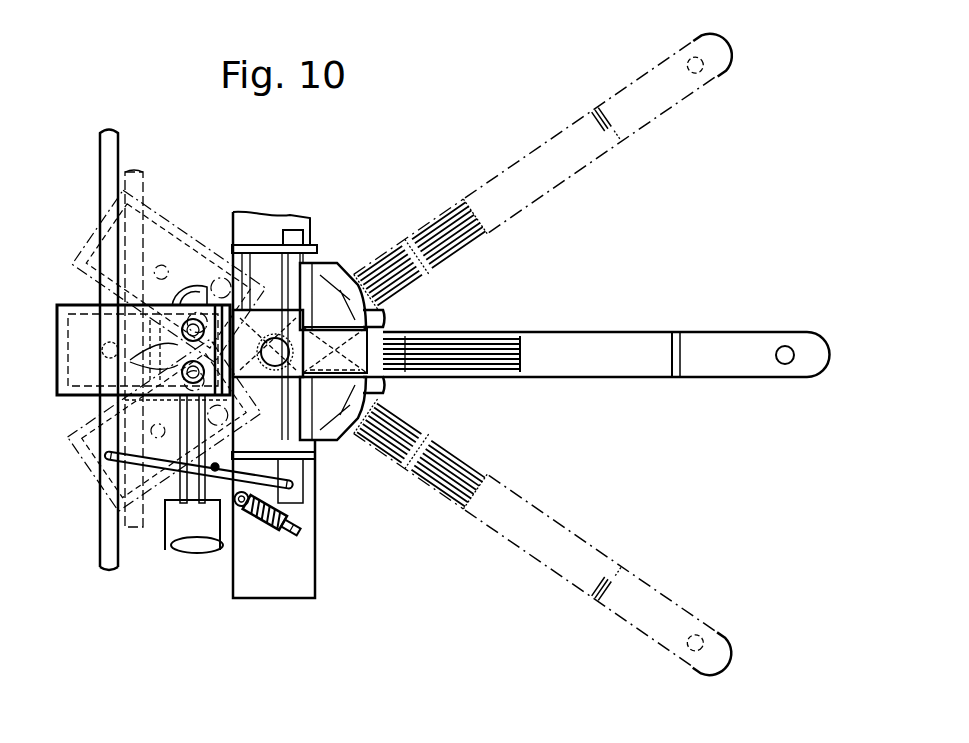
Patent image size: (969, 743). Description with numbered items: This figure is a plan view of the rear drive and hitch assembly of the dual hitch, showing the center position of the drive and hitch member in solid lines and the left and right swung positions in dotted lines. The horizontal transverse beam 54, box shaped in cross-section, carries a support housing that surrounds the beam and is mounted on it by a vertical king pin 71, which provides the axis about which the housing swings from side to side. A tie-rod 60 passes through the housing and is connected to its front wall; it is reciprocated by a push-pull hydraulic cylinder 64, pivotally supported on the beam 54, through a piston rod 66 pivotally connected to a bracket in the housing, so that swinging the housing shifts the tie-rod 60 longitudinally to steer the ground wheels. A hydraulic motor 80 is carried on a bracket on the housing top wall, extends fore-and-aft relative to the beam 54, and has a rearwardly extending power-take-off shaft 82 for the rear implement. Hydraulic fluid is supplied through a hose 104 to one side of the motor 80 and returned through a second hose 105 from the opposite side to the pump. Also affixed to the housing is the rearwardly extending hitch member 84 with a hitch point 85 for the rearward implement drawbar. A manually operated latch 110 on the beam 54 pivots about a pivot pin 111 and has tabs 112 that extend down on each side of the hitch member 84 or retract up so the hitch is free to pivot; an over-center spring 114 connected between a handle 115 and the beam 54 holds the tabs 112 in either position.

The transverse beam 54 is at (303, 573).
The tie-rod 60 is at (106, 153).
The push-pull hydraulic cylinder 64 is at (185, 530).
The piston rod 66 is at (179, 505).
The king pin 71 is at (276, 337).
The hydraulic motor 80 is at (67, 304).
The power-take-off shaft 82 is at (455, 245).
The hitch member 84 is at (560, 533).
The hitch point 85 is at (786, 345).
The hose 104 is at (130, 396).
The second hose 105 is at (193, 294).
The manually operated latch 110 is at (337, 470).
The pivot pin 111 is at (302, 231).
The tabs 112 is at (336, 266).
The over-center spring 114 is at (262, 542).
The handle 115 is at (150, 491).